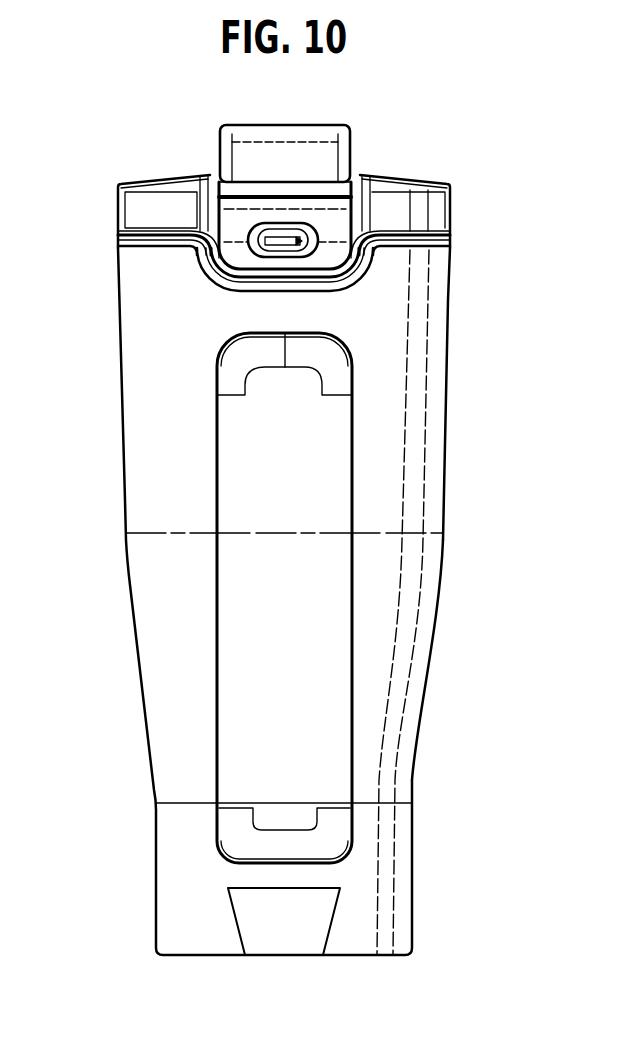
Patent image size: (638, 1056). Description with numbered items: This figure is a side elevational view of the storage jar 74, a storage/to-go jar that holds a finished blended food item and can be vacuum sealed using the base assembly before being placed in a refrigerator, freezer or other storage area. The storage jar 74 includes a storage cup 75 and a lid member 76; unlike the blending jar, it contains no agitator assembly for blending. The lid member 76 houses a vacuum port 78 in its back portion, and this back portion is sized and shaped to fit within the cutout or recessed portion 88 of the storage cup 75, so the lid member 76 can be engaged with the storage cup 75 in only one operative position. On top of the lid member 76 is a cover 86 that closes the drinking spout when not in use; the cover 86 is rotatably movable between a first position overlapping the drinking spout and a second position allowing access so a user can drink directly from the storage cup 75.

The storage jar 74 is at (465, 410).
The storage cup 75 is at (437, 618).
The lid member 76 is at (428, 208).
The vacuum port 78 is at (197, 252).
The cover 86 is at (298, 130).
The cutout portion 88 is at (355, 285).